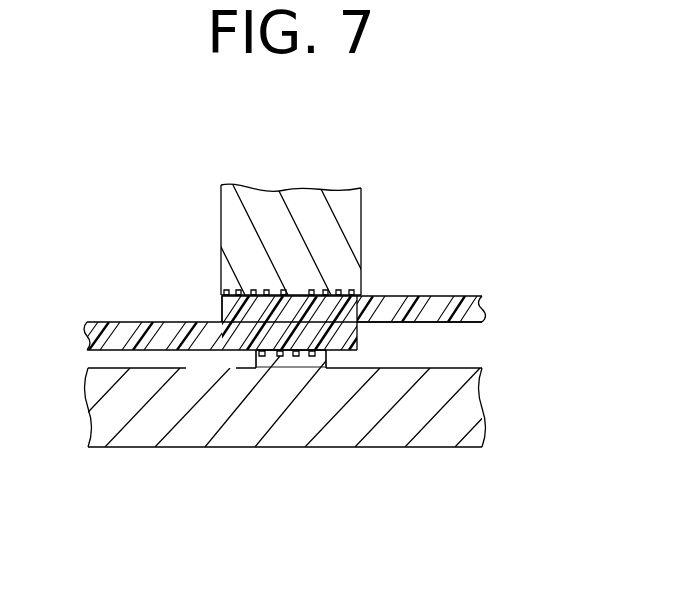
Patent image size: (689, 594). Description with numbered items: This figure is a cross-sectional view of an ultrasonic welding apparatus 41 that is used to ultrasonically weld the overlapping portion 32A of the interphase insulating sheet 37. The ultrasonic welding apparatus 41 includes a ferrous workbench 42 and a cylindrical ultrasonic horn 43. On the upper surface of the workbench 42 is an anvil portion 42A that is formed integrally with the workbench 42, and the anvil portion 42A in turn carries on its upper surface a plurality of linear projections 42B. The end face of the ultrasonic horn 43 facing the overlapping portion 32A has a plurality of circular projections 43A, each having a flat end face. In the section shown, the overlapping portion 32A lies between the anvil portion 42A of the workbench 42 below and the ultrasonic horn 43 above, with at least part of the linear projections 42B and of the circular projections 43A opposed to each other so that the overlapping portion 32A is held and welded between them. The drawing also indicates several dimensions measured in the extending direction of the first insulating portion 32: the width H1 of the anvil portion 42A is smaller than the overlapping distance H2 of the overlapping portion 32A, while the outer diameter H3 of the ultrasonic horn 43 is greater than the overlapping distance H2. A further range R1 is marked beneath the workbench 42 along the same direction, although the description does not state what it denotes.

The first insulating portion 32 is at (141, 321).
The overlapping portion 32A is at (256, 352).
The interphase insulating sheet 37 is at (186, 292).
The ultrasonic welding apparatus 41 is at (470, 236).
The workbench 42 is at (482, 401).
The anvil portion 42A is at (332, 366).
The linear projections 42B is at (295, 368).
The ultrasonic horn 43 is at (362, 206).
The circular projections 43A is at (276, 290).
The width of the anvil portion H1 is at (256, 447).
The overlapping distance H2 is at (224, 313).
The outer diameter of the ultrasonic horn H3 is at (350, 167).
The range dimension R1 is at (360, 521).